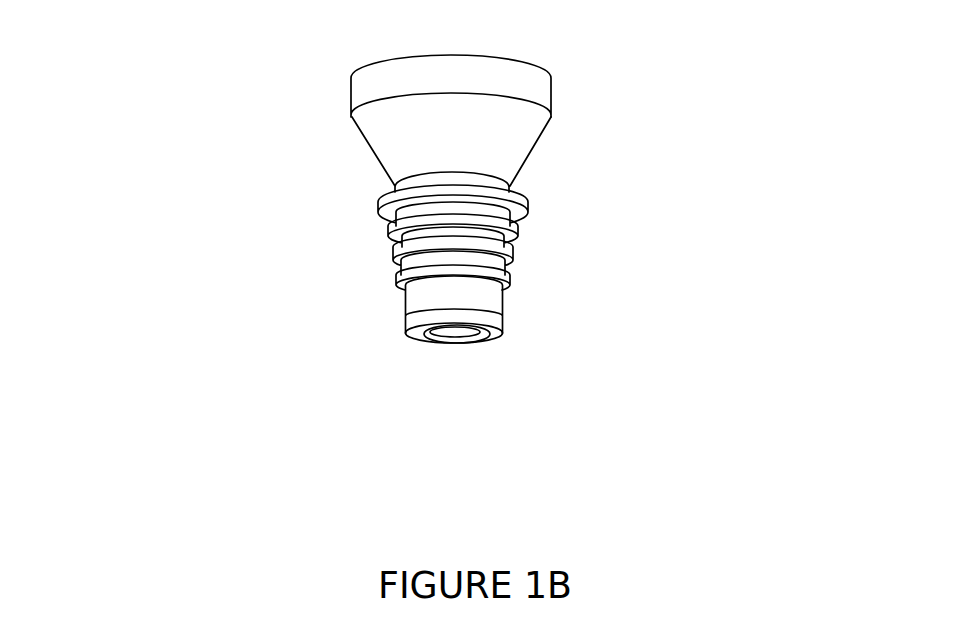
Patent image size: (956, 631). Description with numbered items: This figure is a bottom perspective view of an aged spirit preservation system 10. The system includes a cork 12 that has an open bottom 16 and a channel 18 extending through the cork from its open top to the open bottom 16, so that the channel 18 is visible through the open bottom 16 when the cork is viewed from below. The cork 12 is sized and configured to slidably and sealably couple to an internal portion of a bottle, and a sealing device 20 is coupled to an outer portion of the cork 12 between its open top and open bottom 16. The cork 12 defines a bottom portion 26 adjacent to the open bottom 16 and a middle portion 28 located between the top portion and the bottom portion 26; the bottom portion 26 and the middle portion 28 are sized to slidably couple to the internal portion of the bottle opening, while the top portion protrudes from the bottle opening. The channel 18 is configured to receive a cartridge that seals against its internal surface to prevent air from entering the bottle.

The aged spirit preservation system 10 is at (620, 163).
The cork 12 is at (553, 97).
The open bottom 16 is at (436, 337).
The channel 18 is at (462, 332).
The sealing device 20 is at (378, 203).
The bottom portion 26 is at (497, 337).
The middle portion 28 is at (393, 262).